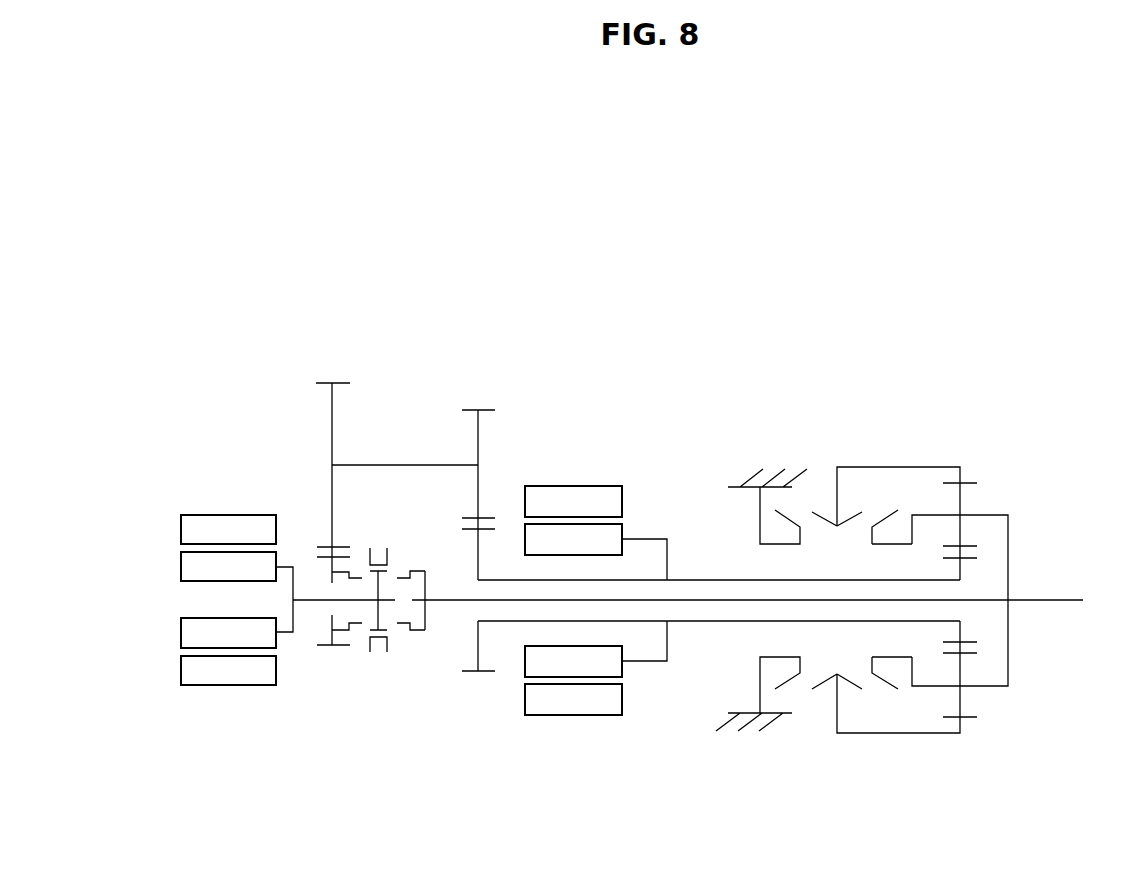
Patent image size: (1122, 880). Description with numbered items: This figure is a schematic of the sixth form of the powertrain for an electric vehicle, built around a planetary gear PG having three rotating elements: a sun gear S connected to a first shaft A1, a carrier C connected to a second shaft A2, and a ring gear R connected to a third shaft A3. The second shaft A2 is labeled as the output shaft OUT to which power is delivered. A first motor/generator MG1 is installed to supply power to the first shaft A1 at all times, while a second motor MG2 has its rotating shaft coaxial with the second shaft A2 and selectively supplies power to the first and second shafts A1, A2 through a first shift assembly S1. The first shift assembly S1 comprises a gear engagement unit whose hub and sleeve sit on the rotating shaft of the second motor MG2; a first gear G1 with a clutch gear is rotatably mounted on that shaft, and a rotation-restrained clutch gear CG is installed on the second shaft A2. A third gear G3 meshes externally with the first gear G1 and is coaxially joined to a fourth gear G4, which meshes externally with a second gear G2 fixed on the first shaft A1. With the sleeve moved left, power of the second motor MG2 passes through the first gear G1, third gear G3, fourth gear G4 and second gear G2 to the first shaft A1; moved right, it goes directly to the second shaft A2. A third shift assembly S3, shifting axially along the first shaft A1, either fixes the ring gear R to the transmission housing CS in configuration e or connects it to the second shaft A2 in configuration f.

The second motor MG2 is at (237, 587).
The first motor/generator MG1 is at (596, 587).
The first gear G1 is at (326, 649).
The second gear G2 is at (476, 675).
The third gear G3 is at (344, 383).
The fourth gear G4 is at (487, 410).
The first shift assembly S1 is at (377, 660).
The clutch gear CG is at (404, 632).
The first shaft A1 is at (690, 580).
The second shaft A2 is at (1003, 513).
The third shaft A3 is at (912, 467).
The transmission housing CS is at (780, 476).
The ring gear R is at (972, 483).
The carrier C is at (985, 513).
The sun gear S is at (972, 558).
The third shift assembly S3 is at (824, 694).
The third shift assembly configuration connecting third rotating element to transmis e is at (795, 694).
The third shift assembly configuration connecting third rotating element to second s f is at (886, 694).
The planetary gear PG is at (971, 731).
The output shaft OUT is at (1056, 601).